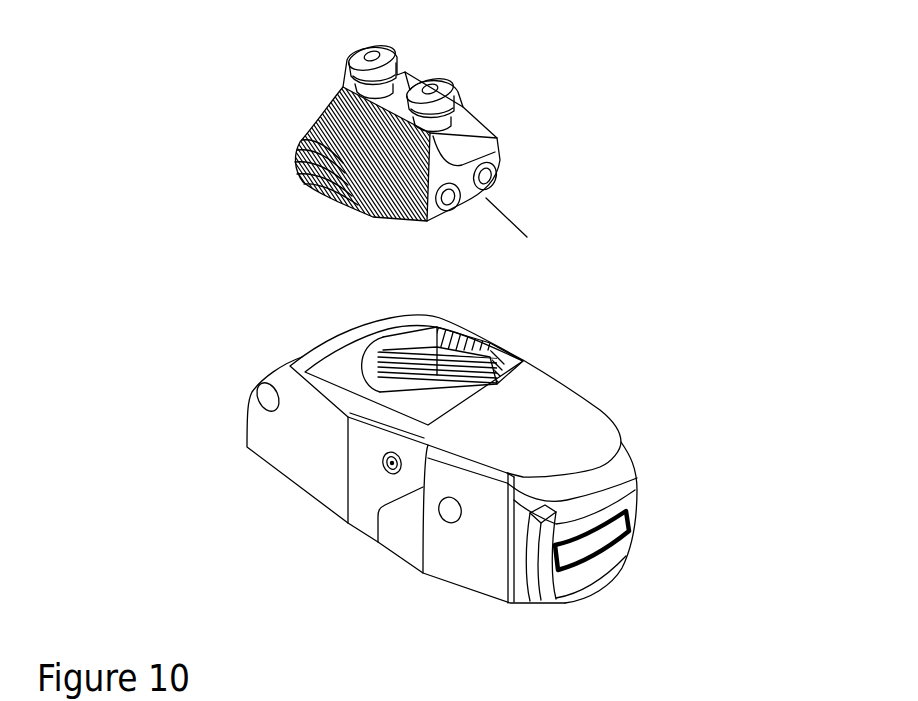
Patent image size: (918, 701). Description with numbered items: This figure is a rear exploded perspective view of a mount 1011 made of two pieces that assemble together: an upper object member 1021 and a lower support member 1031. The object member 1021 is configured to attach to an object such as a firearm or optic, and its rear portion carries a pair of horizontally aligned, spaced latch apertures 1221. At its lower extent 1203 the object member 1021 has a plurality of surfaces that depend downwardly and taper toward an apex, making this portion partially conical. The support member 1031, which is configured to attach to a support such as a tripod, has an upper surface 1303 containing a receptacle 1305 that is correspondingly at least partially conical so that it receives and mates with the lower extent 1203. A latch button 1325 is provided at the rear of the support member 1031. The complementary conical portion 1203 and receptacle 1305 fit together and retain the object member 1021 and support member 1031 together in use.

The lower extent 1203 is at (284, 131).
The object member 1021 is at (488, 128).
The latch apertures 1221 is at (468, 204).
The mount 1011 is at (699, 356).
The receptacle 1305 is at (414, 373).
The upper surface 1303 is at (558, 425).
The support member 1031 is at (318, 478).
The latch button 1325 is at (610, 562).